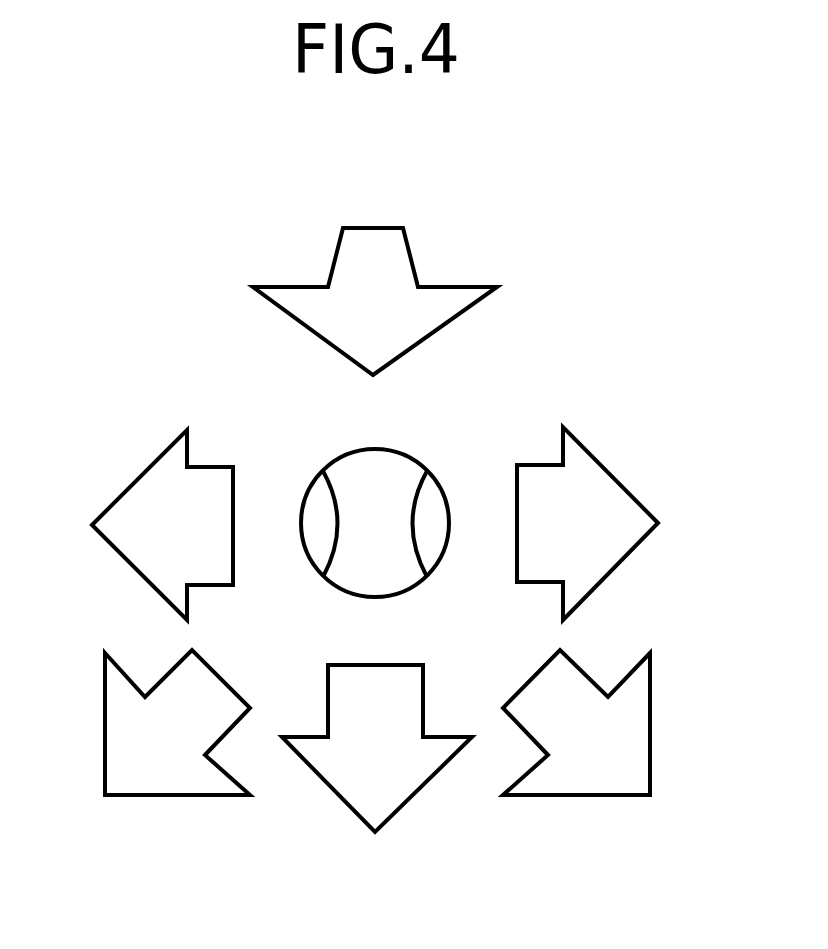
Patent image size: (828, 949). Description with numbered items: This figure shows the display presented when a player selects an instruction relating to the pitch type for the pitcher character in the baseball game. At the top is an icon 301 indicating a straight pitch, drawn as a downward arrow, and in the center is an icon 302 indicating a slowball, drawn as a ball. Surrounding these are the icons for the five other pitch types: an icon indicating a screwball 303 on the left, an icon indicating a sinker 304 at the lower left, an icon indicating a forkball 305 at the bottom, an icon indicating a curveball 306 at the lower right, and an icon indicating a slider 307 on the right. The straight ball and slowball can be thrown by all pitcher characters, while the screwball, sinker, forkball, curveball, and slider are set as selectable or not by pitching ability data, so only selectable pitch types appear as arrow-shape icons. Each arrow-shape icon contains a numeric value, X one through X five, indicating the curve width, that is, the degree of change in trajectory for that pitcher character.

The icon indicating a straight pitch 301 is at (413, 255).
The icon indicating a slowball 302 is at (412, 458).
The icon indicating a screwball 303 is at (213, 467).
The icon indicating a sinker 304 is at (165, 797).
The icon indicating a forkball 305 is at (413, 798).
The icon indicating a curveball 306 is at (623, 797).
The icon indicating a slider 307 is at (617, 478).